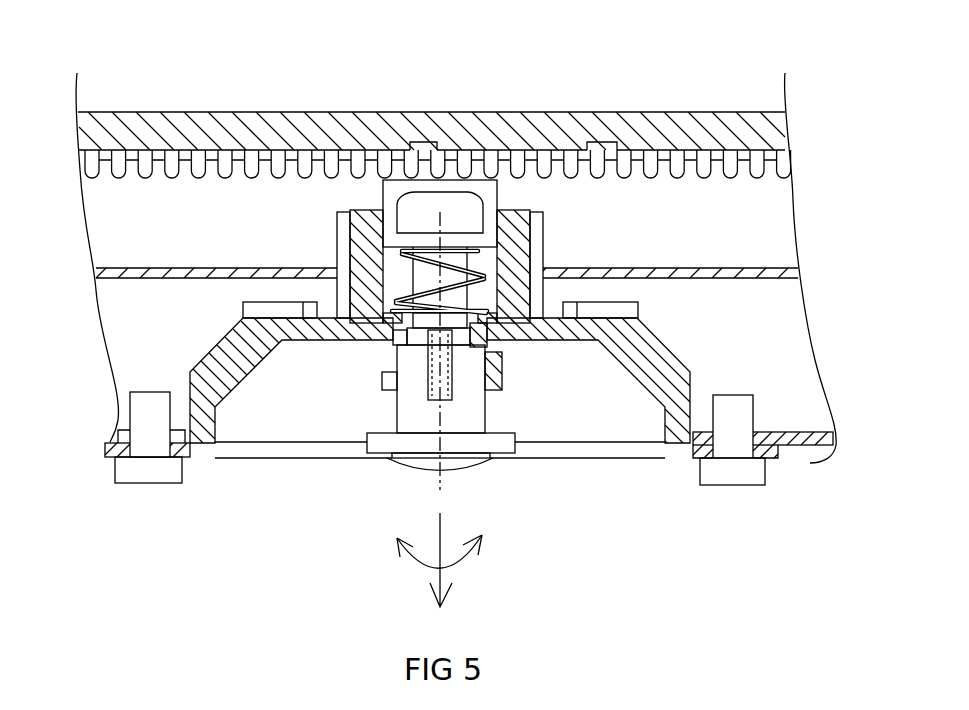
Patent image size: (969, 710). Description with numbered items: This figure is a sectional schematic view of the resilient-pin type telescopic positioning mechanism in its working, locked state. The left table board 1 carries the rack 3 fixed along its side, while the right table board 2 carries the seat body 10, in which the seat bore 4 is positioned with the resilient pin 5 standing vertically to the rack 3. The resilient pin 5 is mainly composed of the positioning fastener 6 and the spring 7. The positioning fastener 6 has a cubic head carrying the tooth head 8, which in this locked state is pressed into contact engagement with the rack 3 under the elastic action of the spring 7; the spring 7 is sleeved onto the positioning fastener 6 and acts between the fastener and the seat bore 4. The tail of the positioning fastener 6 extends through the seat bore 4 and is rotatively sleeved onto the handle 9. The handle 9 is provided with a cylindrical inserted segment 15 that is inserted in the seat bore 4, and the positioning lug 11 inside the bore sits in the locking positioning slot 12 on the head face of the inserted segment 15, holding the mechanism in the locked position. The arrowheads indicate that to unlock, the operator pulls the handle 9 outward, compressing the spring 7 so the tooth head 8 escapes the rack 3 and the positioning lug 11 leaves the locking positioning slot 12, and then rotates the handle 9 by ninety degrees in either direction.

The left table board 1 is at (312, 135).
The right table board 2 is at (140, 270).
The rack 3 is at (517, 167).
The seat bore 4 is at (503, 363).
The resilient pin 5 is at (383, 322).
The positioning fastener 6 is at (462, 178).
The spring 7 is at (422, 257).
The tooth head 8 is at (455, 222).
The handle 9 is at (413, 445).
The seat body 10 is at (212, 387).
The positioning lug 11 is at (447, 372).
The locking positioning slot 12 is at (462, 452).
The inserted segment 15 is at (407, 390).